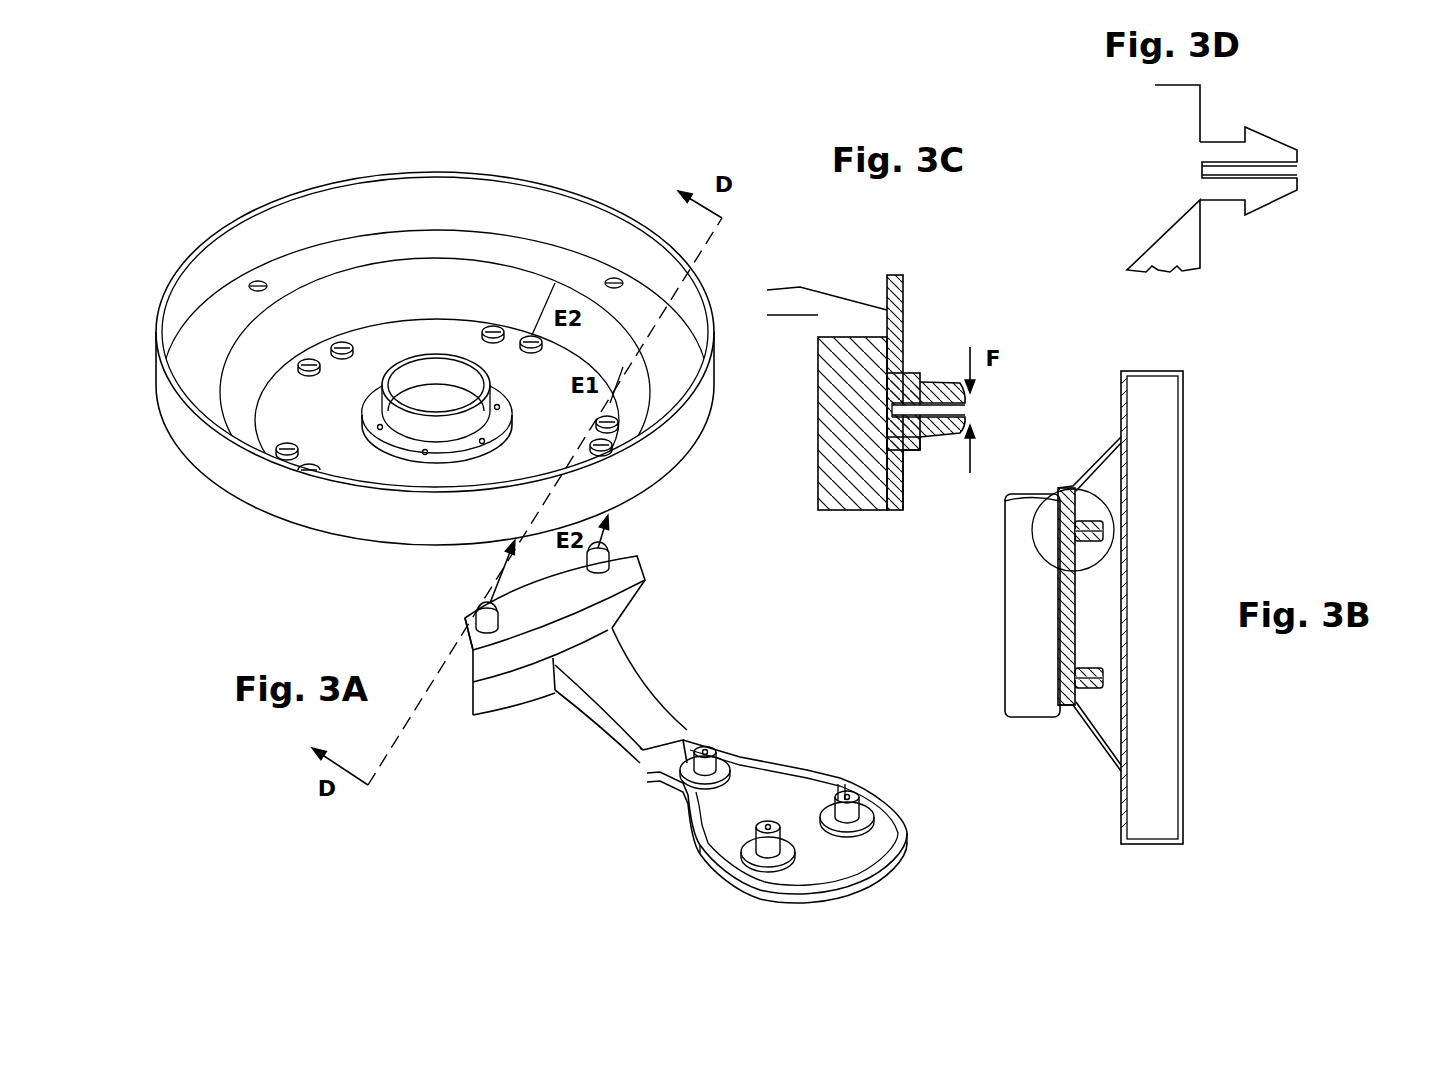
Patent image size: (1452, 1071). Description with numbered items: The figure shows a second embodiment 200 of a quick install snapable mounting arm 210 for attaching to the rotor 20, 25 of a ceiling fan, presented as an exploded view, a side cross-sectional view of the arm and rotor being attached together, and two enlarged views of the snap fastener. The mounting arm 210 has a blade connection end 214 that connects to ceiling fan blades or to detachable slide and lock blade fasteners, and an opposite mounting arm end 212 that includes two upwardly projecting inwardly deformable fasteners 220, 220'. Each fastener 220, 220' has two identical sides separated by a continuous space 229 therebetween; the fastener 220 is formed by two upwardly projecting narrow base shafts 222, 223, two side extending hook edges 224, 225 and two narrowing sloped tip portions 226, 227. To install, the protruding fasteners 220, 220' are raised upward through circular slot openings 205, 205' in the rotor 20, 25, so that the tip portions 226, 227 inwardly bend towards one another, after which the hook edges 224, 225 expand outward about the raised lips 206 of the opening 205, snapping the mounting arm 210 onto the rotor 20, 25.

In FIG. 3A, the rotor 20 is at (406, 187).
In FIG. 3B, the rotor 20 is at (1157, 384).
In FIG. 3A, the rotor 25 is at (384, 336).
In FIG. 3C, the rotor 25 is at (905, 290).
In FIG. 3B, the rotor 25 is at (1089, 742).
In FIG. 3A, the second embodiment of quick install snapable mounting arm 200 is at (266, 574).
In FIG. 3A, the circular slot opening 205 is at (447, 399).
In FIG. 3C, the circular slot opening 205 is at (967, 311).
In FIG. 3A, the circular slot opening 205' is at (486, 318).
In FIG. 3C, the raised lips 206 is at (907, 378).
In FIG. 3A, the mounting arm 210 is at (625, 717).
In FIG. 3A, the mounting arm end 212 is at (493, 700).
In FIG. 3C, the mounting arm end 212 is at (853, 470).
In FIG. 3B, the mounting arm end 212 is at (1032, 605).
In FIG. 3D, the mounting arm end 212 is at (1182, 238).
In FIG. 3A, the blade connection end 214 is at (742, 868).
In FIG. 3A, the inwardly deformable snap fastener 220 is at (426, 598).
In FIG. 3C, the inwardly deformable snap fastener 220 is at (988, 392).
In FIG. 3B, the inwardly deformable snap fastener 220 is at (1159, 588).
In FIG. 3D, the inwardly deformable snap fastener 220 is at (1287, 242).
In FIG. 3A, the inwardly deformable fastener 220' is at (663, 534).
In FIG. 3D, the base shaft 222 is at (1215, 147).
In FIG. 3D, the base shaft 223 is at (1225, 200).
In FIG. 3C, the hook edge 224 is at (907, 395).
In FIG. 3D, the hook edge 224 is at (1247, 131).
In FIG. 3C, the hook edge 225 is at (923, 443).
In FIG. 3D, the hook edge 225 is at (1253, 213).
In FIG. 3D, the sloped tip portion 226 is at (1298, 152).
In FIG. 3D, the sloped tip portion 227 is at (1298, 190).
In FIG. 3D, the continuous space 229 is at (1298, 160).